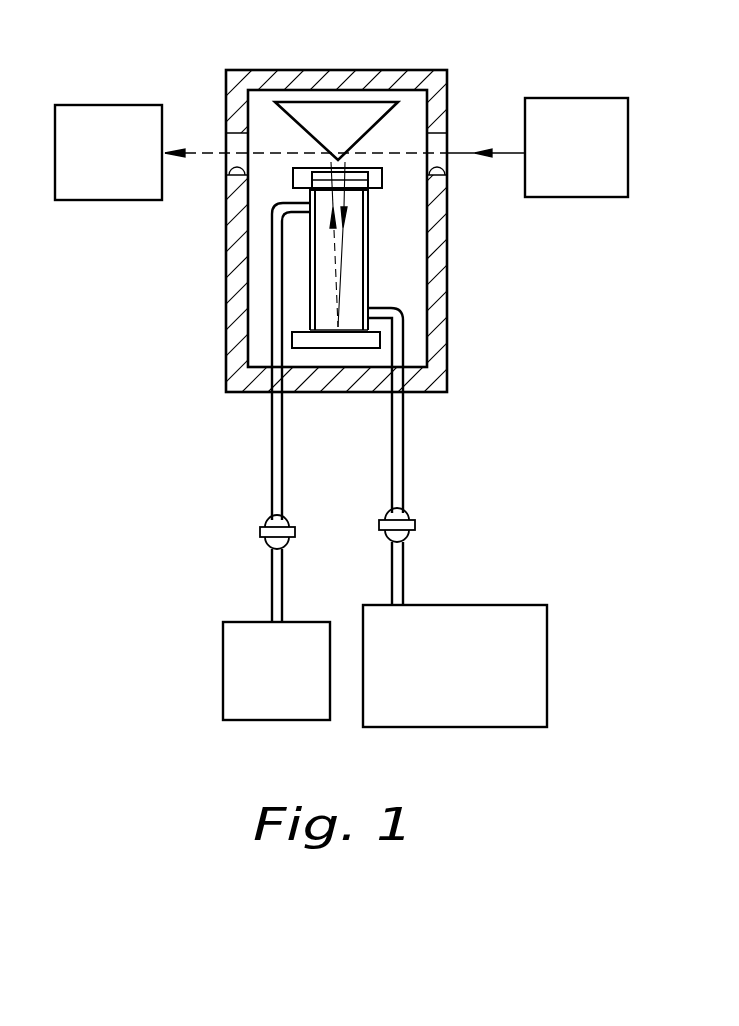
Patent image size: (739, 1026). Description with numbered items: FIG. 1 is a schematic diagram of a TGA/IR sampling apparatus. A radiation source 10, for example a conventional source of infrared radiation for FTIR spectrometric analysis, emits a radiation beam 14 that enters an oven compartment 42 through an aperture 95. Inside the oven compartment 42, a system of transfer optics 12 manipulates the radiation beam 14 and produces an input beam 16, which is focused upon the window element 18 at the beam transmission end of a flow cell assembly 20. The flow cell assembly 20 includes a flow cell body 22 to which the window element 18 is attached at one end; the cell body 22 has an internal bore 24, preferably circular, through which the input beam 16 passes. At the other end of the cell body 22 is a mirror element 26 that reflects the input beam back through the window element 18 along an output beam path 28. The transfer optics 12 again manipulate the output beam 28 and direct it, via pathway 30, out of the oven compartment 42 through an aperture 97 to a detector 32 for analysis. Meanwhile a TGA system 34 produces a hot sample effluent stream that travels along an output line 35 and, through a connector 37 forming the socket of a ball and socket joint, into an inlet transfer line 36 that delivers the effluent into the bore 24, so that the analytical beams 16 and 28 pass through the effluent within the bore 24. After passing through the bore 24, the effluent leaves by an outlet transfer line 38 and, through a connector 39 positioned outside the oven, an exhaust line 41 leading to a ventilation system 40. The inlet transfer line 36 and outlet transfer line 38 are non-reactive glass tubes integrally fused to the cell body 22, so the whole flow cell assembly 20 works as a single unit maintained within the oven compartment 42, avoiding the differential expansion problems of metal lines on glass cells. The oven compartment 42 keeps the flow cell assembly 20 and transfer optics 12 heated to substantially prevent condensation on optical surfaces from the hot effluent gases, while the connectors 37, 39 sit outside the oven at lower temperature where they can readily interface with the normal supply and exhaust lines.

The radiation source 10 is at (582, 98).
The system of transfer optics 12 is at (328, 133).
The radiation beam 14 is at (497, 152).
The input beam 16 is at (345, 243).
The window element 18 is at (382, 182).
The flow cell assembly 20 is at (371, 266).
The flow cell body 22 is at (372, 294).
The internal bore 24 is at (305, 258).
The mirror element 26 is at (397, 309).
The output beam path 28 is at (328, 198).
The pathway 30 is at (194, 151).
The detector 32 is at (104, 105).
The TGA system 34 is at (547, 695).
The output line 35 is at (406, 572).
The inlet transfer line 36 is at (405, 440).
The connector 37 is at (410, 520).
The outlet transfer line 38 is at (270, 405).
The connector 39 is at (265, 525).
The ventilation system 40 is at (222, 678).
The exhaust line 41 is at (270, 562).
The oven compartment 42 is at (405, 71).
The aperture 95 is at (447, 171).
The aperture 97 is at (224, 176).